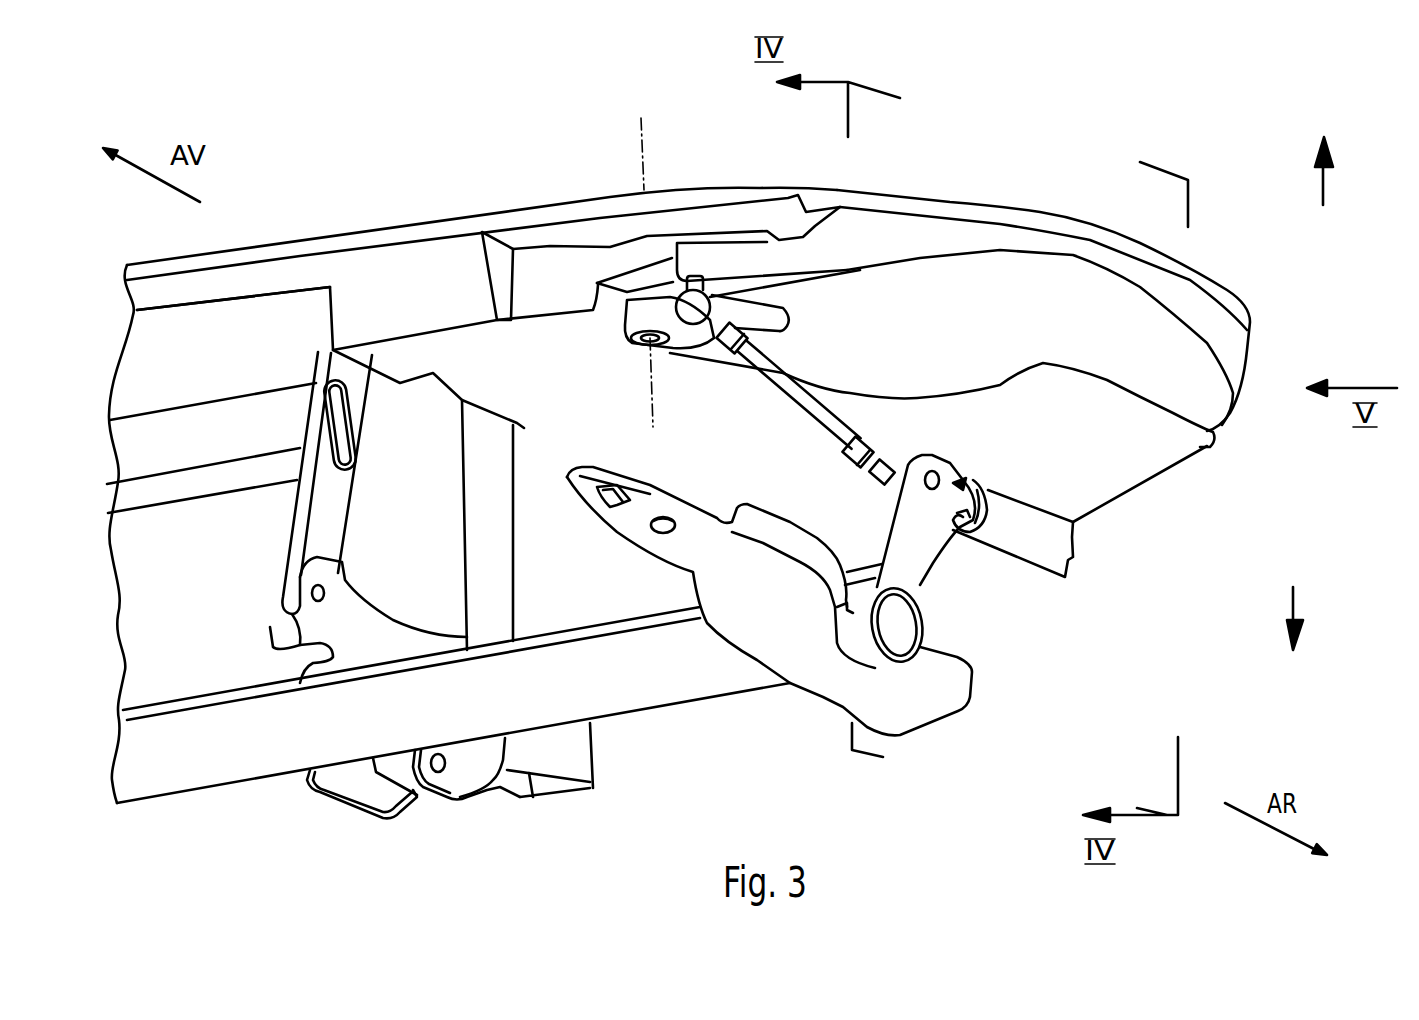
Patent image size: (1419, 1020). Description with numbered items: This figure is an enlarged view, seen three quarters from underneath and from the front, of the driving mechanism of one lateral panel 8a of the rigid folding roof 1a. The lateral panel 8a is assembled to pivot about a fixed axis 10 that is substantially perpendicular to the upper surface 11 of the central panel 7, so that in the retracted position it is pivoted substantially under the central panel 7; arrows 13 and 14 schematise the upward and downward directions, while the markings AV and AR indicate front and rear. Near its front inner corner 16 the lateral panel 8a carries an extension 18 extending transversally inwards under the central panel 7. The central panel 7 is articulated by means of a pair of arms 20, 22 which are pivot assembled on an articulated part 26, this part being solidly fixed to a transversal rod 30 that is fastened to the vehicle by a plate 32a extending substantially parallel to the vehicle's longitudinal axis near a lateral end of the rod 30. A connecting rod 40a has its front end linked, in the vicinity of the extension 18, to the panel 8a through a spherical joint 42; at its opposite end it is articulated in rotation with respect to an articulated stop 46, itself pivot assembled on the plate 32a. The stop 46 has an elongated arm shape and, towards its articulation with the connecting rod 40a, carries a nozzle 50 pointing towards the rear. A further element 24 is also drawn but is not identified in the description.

The rigid folding roof 1a is at (1072, 558).
The central panel 7 is at (327, 268).
The lateral panel 8a is at (990, 263).
The axis 10 is at (647, 411).
The upper surface 11 is at (437, 220).
The arrow 13 is at (1323, 178).
The arrow 14 is at (1293, 600).
The front inner corner 16 is at (627, 323).
The extension 18 is at (720, 253).
The arm 20 is at (313, 523).
The arm 22 is at (490, 577).
The side panel 24 is at (200, 433).
The articulated part 26 is at (387, 637).
The transversal rod 30 is at (657, 683).
The plate 32a is at (837, 687).
The connecting rod 40a is at (880, 437).
The spherical joint 42 is at (627, 290).
The articulated stop 46 is at (963, 482).
The nozzle 50 is at (943, 530).